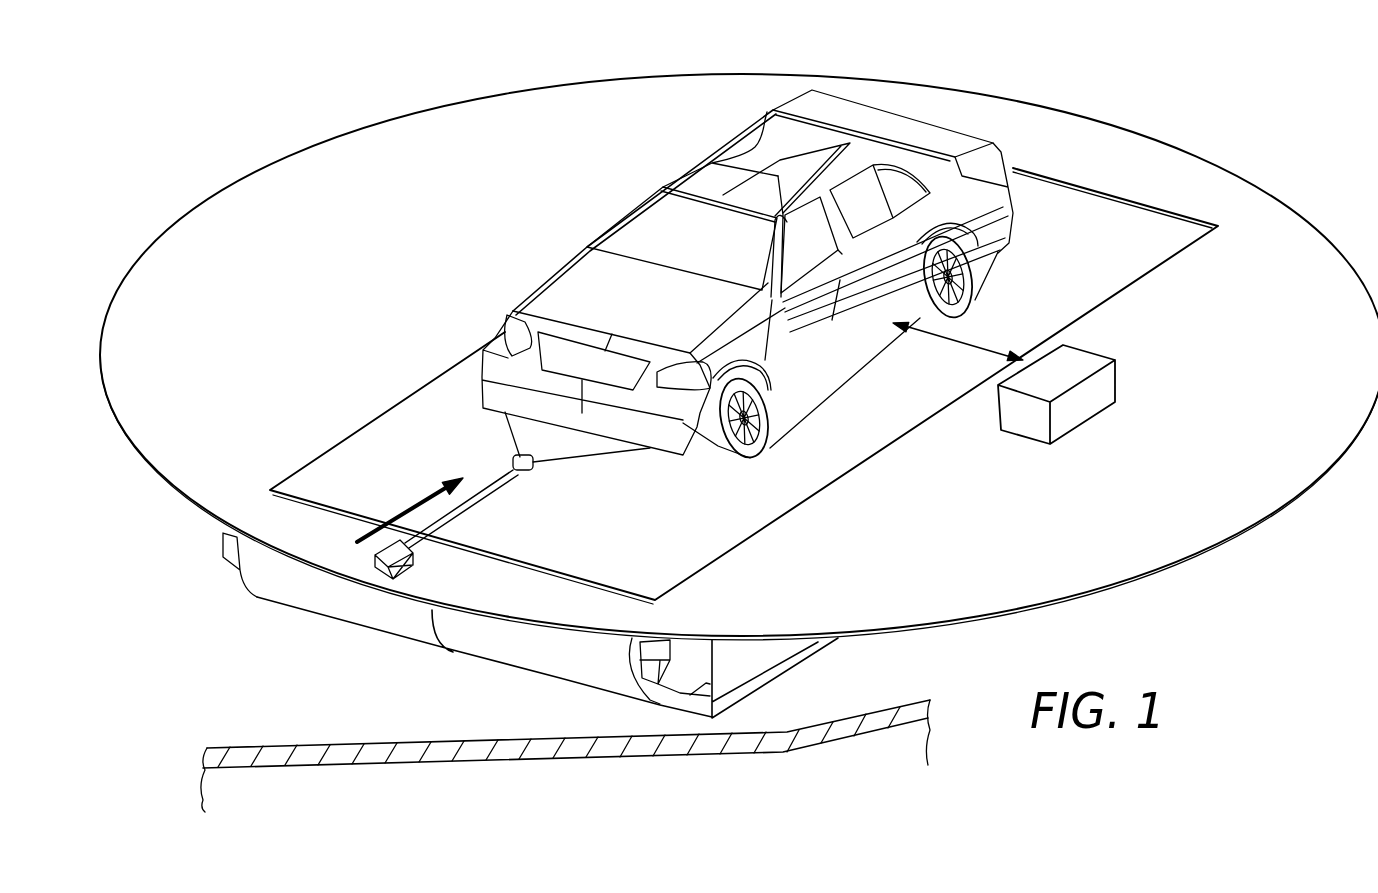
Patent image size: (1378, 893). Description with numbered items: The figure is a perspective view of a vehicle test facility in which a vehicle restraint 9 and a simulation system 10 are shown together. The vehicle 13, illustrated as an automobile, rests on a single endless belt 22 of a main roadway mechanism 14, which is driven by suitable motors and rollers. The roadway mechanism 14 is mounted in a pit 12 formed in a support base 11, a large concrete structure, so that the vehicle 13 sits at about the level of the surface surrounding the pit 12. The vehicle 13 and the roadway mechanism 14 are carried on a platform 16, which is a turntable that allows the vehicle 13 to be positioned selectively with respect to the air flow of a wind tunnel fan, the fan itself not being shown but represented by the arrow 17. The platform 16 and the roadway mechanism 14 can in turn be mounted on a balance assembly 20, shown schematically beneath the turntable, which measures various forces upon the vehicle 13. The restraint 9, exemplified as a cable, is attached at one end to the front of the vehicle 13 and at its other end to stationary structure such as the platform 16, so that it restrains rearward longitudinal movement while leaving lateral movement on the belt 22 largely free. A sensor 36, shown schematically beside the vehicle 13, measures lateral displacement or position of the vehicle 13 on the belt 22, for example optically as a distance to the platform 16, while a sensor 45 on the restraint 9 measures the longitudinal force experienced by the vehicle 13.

The vehicle restraint 9 is at (493, 500).
The simulation system 10 is at (1212, 118).
The support base 11 is at (203, 783).
The pit 12 is at (400, 724).
The vehicle 13 is at (975, 117).
The main roadway mechanism 14 is at (190, 555).
The platform 16 is at (1182, 528).
The arrow 17 is at (413, 502).
The balance assembly 20 is at (773, 668).
The endless belt 22 is at (720, 520).
The sensor 36 is at (1093, 382).
The sensor 45 is at (417, 567).